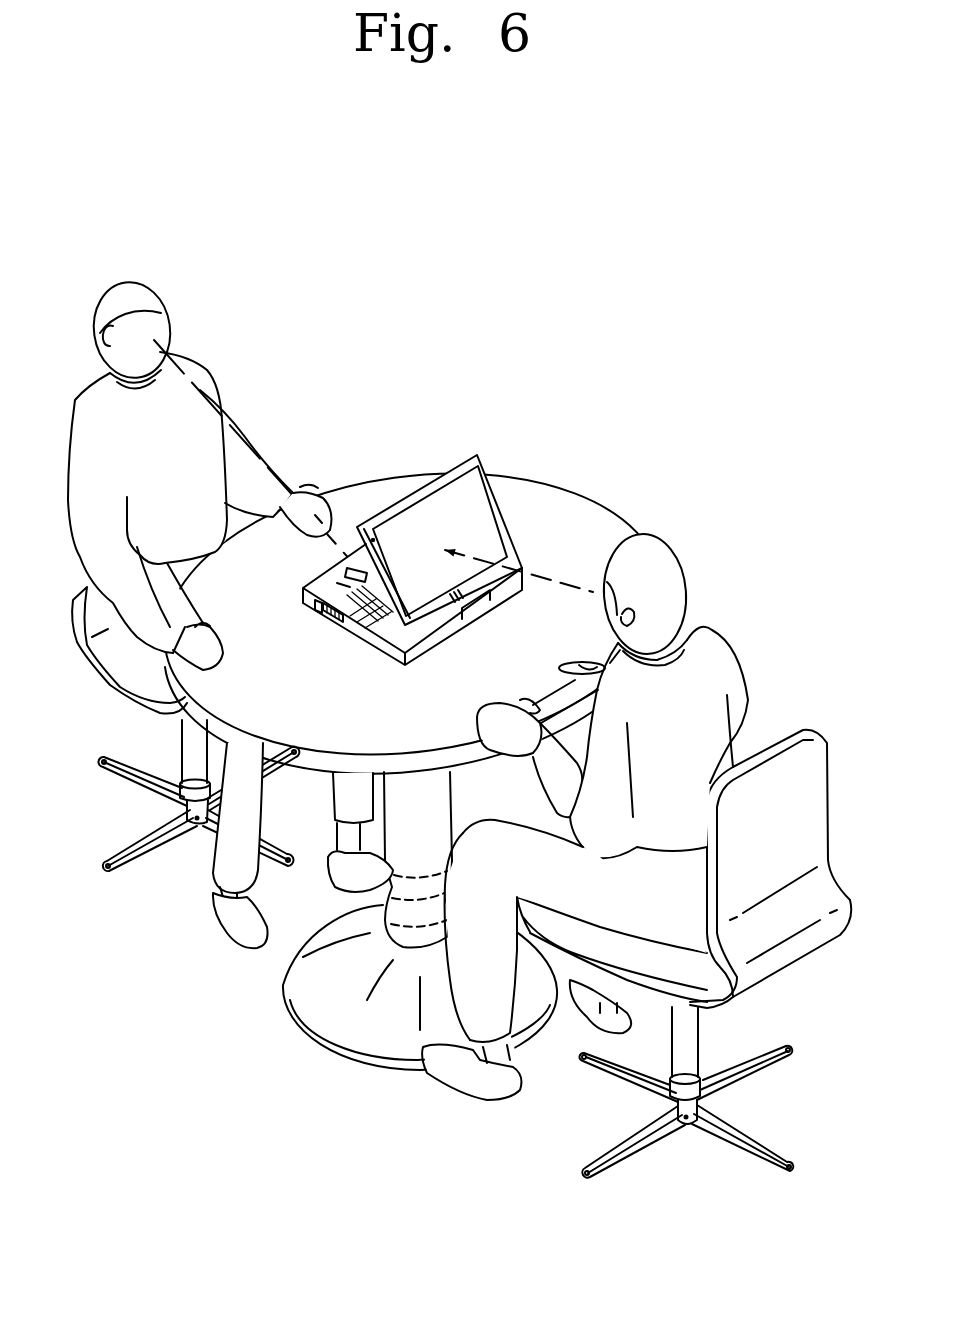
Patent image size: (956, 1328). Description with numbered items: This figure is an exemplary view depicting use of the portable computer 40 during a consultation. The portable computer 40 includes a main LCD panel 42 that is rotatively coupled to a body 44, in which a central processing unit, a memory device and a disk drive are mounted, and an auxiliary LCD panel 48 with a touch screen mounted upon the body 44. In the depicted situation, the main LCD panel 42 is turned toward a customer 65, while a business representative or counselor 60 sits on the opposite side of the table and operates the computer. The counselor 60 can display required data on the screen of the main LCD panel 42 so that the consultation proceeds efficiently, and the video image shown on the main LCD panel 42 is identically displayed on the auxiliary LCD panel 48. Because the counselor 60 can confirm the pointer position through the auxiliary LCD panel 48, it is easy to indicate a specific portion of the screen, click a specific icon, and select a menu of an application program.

The portable computer 40 is at (443, 527).
The main LCD panel 42 is at (503, 510).
The body 44 is at (350, 638).
The auxiliary LCD panel 48 is at (318, 612).
The business representative or counselor 60 is at (248, 377).
The customer 65 is at (755, 652).